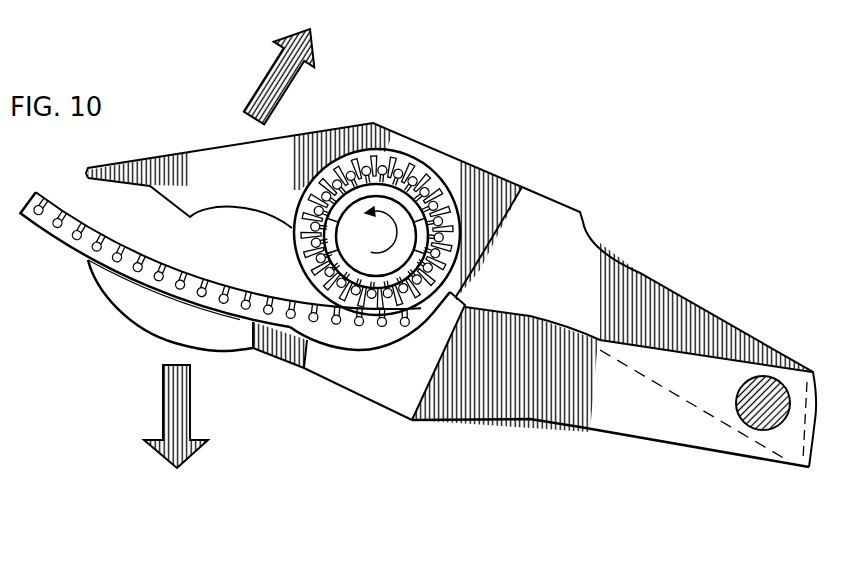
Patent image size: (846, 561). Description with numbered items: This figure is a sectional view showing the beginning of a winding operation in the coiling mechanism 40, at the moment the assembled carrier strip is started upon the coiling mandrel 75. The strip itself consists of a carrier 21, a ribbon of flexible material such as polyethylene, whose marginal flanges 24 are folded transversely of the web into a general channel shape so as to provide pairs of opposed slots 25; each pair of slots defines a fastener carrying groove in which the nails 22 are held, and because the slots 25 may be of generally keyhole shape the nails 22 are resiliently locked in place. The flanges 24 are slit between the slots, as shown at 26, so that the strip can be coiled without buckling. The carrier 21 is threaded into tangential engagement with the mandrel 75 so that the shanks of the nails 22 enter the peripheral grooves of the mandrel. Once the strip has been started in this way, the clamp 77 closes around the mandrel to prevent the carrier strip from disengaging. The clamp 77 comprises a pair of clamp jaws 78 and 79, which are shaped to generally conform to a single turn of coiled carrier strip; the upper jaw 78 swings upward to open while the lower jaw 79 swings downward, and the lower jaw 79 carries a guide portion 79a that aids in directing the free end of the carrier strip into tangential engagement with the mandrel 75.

The coiling mechanism 40 is at (476, 118).
The clamp jaw 78 is at (270, 152).
The clamp 77 is at (553, 189).
The coiling mandrel 75 is at (407, 200).
The clamp jaw 79 is at (251, 340).
The guide portion 79a is at (137, 288).
The flanges 24 is at (210, 259).
The nails 22 is at (220, 262).
The carrier 21 is at (229, 283).
The slots 25 is at (110, 248).
The slit 26 is at (117, 225).